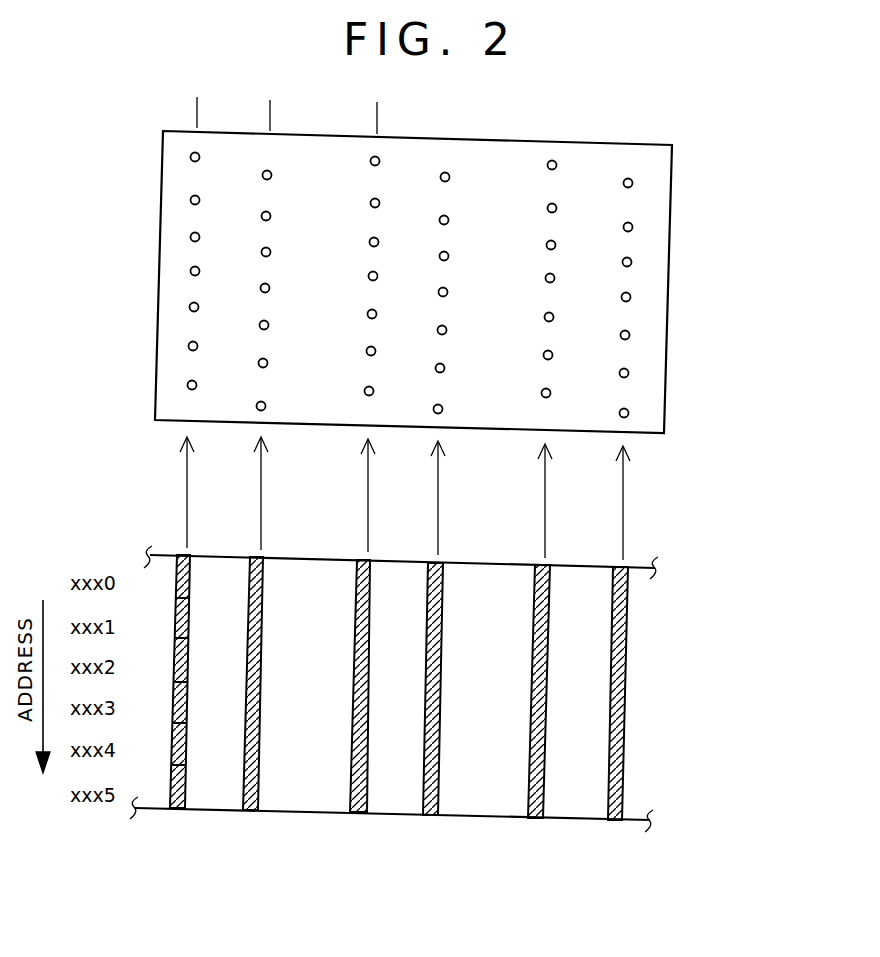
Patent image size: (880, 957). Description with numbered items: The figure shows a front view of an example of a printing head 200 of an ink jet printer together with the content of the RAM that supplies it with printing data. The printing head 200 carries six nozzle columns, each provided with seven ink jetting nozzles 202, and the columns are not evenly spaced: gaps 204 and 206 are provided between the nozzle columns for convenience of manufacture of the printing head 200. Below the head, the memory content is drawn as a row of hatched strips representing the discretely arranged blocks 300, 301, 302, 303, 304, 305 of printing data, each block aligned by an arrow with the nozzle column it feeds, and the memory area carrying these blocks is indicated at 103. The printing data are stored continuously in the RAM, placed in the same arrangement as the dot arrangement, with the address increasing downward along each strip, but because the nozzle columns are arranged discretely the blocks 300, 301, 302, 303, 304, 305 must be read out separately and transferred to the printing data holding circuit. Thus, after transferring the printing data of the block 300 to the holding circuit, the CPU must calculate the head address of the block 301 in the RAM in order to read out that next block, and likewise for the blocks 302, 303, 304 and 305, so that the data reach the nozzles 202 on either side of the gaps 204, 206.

The printing head 200 is at (676, 249).
The ink jetting nozzle 202 is at (629, 412).
The gap 204 is at (270, 113).
The gap 206 is at (377, 115).
The electrode substrate 103 is at (402, 820).
The block 300 is at (178, 810).
The block 301 is at (251, 812).
The block 302 is at (358, 814).
The block 303 is at (432, 817).
The block 304 is at (538, 820).
The block 305 is at (615, 822).